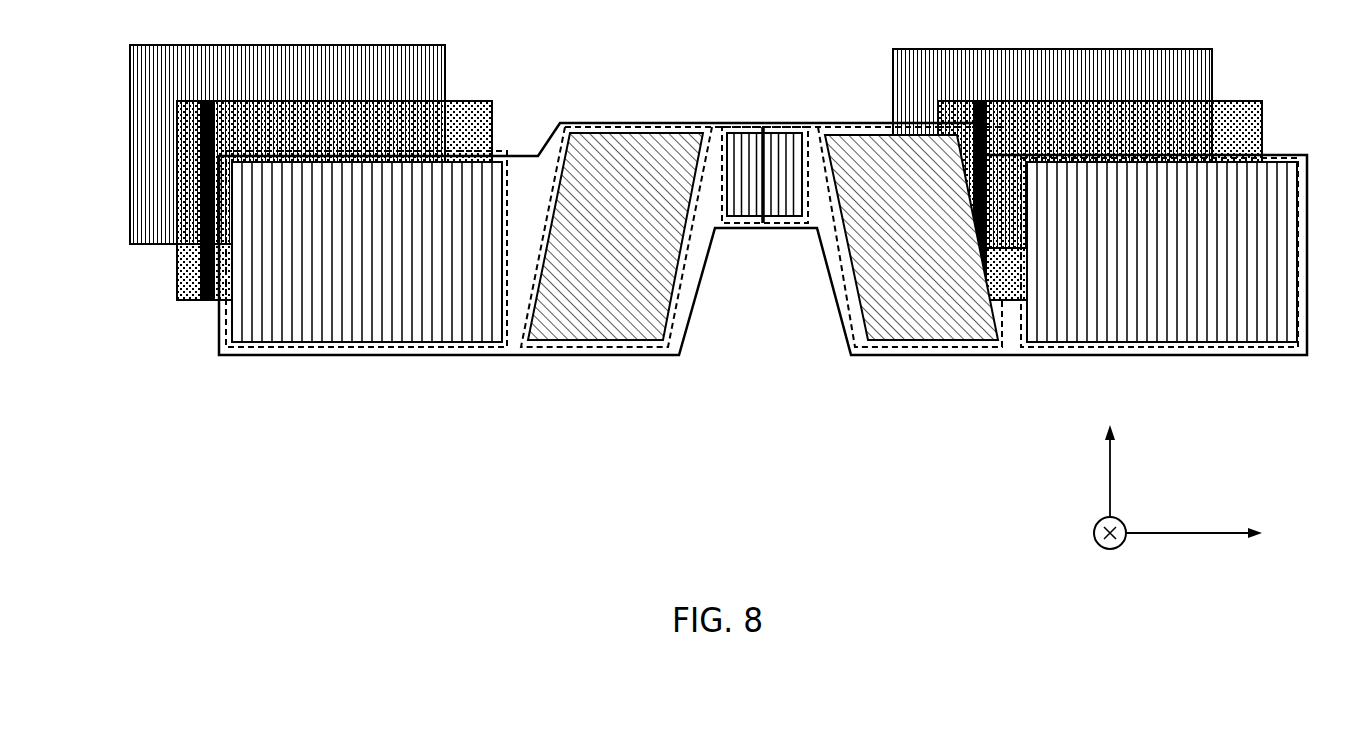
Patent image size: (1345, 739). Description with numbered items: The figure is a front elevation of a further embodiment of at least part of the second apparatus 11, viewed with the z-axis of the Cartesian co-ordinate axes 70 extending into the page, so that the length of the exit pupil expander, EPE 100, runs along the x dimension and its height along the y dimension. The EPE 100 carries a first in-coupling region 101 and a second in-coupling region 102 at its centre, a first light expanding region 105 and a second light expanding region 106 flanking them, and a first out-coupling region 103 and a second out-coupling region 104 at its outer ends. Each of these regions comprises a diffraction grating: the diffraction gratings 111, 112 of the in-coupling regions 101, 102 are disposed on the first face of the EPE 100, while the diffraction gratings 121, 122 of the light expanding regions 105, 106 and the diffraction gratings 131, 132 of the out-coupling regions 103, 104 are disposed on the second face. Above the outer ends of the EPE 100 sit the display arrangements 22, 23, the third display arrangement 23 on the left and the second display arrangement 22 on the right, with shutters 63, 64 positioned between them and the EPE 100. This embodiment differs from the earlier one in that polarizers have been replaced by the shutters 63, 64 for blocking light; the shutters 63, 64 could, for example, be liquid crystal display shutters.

The second apparatus 11 is at (238, 440).
The second display arrangement 22 is at (881, 42).
The third display arrangement 23 is at (468, 53).
The shutter 63 is at (924, 107).
The shutter 64 is at (503, 106).
The Cartesian co-ordinate axes 70 is at (1169, 559).
The exit pupil expander (EPE) 100 is at (565, 356).
The first in-coupling region 101 is at (787, 225).
The second in-coupling region 102 is at (742, 225).
The first out-coupling region 103 is at (1053, 347).
The second out-coupling region 104 is at (260, 348).
The first light expanding region 105 is at (852, 303).
The second light expanding region 106 is at (537, 347).
The diffraction grating 111 is at (780, 132).
The diffraction grating 112 is at (742, 132).
The diffraction grating 121 is at (915, 345).
The diffraction grating 122 is at (633, 343).
The diffraction grating 131 is at (1145, 345).
The diffraction grating 132 is at (383, 348).